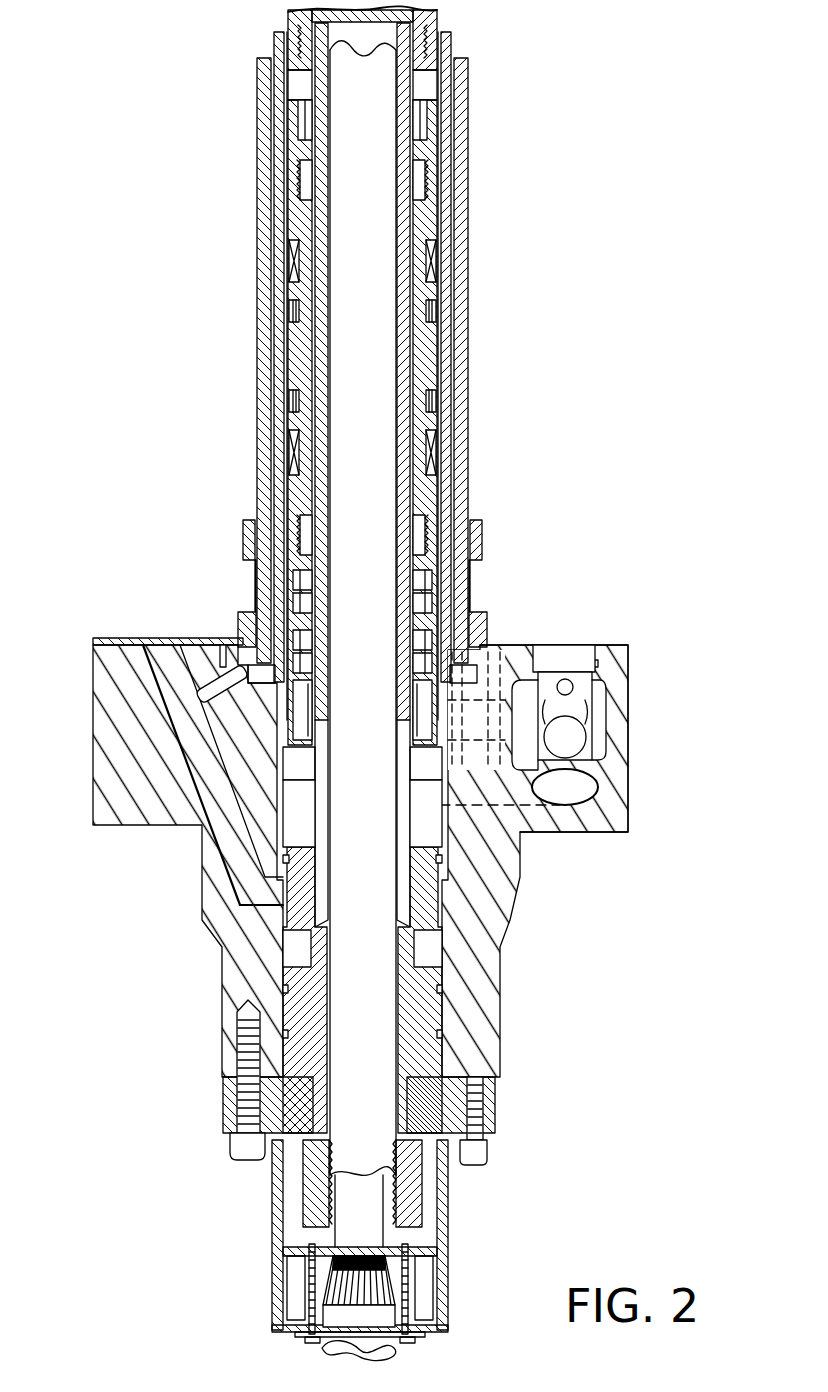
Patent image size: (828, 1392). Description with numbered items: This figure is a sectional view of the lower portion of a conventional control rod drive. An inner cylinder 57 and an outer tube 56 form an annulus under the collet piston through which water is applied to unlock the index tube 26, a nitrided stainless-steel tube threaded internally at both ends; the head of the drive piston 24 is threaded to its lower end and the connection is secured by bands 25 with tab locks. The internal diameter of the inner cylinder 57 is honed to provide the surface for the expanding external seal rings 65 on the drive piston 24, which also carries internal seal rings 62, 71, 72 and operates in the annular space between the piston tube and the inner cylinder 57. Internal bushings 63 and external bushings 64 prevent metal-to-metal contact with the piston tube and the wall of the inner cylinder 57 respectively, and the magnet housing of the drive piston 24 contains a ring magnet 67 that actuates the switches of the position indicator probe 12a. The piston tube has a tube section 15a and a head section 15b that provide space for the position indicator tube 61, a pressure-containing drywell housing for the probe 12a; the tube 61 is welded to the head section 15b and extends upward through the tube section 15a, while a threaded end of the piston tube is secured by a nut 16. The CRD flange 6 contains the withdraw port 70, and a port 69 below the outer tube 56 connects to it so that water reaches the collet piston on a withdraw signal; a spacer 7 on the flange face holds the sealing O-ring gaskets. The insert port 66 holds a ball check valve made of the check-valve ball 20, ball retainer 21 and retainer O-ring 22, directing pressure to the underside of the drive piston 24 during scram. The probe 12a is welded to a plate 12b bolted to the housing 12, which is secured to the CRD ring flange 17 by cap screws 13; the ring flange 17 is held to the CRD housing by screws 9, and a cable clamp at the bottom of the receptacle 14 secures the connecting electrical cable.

The CRD flange 6 is at (92, 785).
The spacer 7 is at (115, 640).
The screws 9 is at (248, 1150).
The housing 12 is at (447, 1268).
The position indicator probe 12a is at (372, 1237).
The plate 12b is at (283, 1283).
The cap screws 13 is at (478, 1150).
The receptacle 14 is at (385, 1322).
The tube section 15a is at (398, 757).
The head section 15b is at (402, 870).
The nut 16 is at (440, 1194).
The CRD ring flange 17 is at (496, 1085).
The check-valve ball 20 is at (592, 780).
The ball retainer 21 is at (576, 740).
The retainer O-ring 22 is at (598, 668).
The drive piston 24 is at (296, 358).
The bands 25 is at (452, 72).
The index tube 26 is at (438, 28).
The outer tube 56 is at (465, 207).
The inner cylinder 57 is at (462, 345).
The position indicator tube 61 is at (380, 95).
The internal seal rings 62 is at (305, 132).
The internal bushings 63 is at (313, 182).
The external bushings 64 is at (433, 262).
The external seal rings 65 is at (431, 312).
The insert port 66 is at (568, 652).
The ring magnet 67 is at (300, 704).
The port 69 is at (175, 675).
The withdraw port 70 is at (172, 690).
The internal seal rings 71 is at (300, 657).
The internal seal rings 72 is at (300, 600).